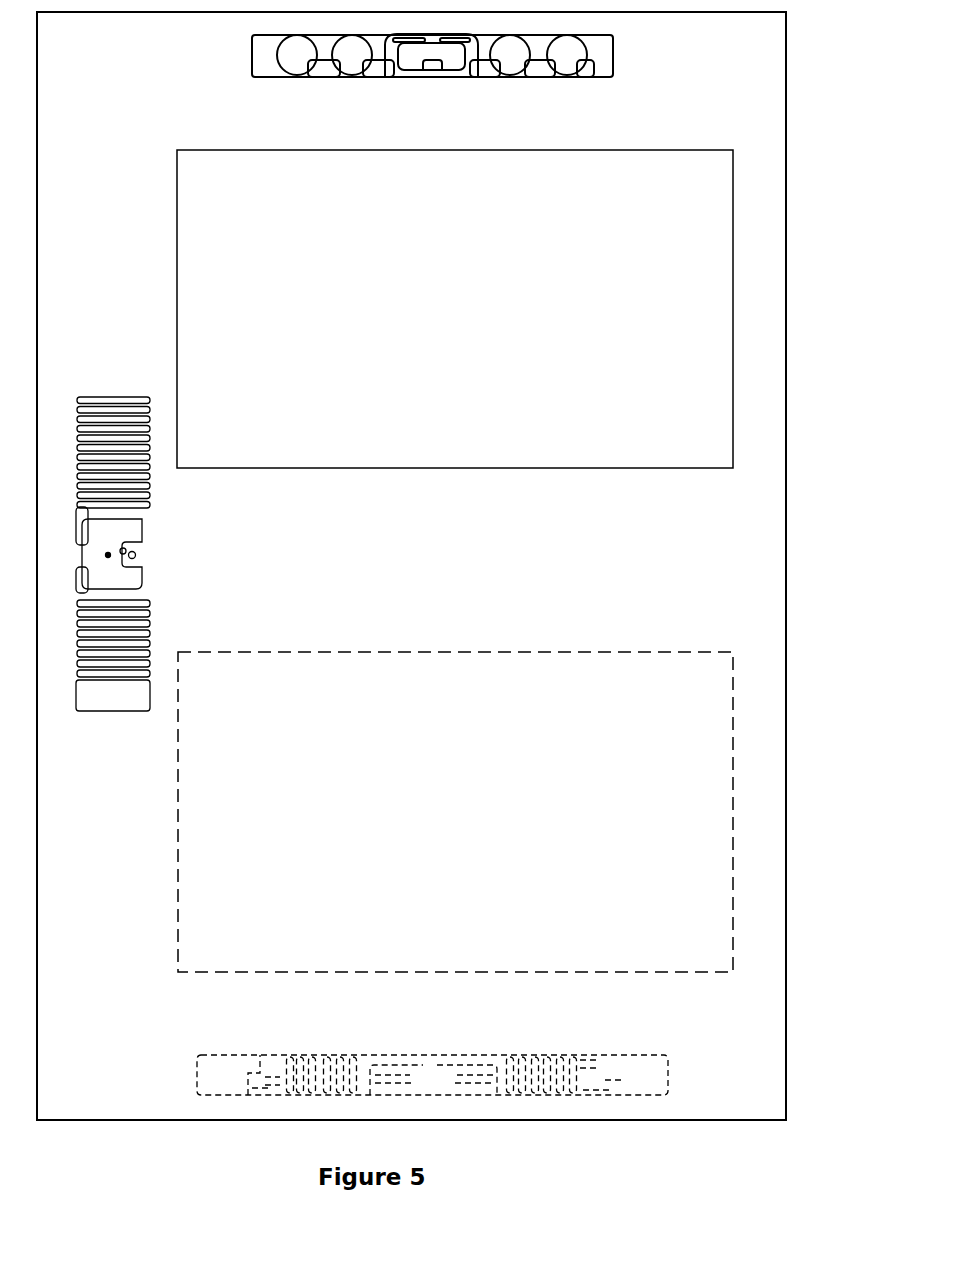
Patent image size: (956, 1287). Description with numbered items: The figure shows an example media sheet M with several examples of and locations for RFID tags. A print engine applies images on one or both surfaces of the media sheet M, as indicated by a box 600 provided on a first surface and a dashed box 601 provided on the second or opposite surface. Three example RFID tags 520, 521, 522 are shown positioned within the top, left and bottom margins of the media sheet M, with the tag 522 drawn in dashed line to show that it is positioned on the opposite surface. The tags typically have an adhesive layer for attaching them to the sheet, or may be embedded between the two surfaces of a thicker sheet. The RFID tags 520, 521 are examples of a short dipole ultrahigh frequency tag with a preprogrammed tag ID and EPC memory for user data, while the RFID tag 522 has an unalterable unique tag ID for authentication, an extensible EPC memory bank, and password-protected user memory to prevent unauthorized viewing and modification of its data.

The media sheet M is at (786, 205).
The RFID tag 520 is at (613, 63).
The RFID tag 521 is at (93, 397).
The RFID tag 522 is at (668, 1073).
The box 600 is at (177, 345).
The dashed box 601 is at (178, 790).